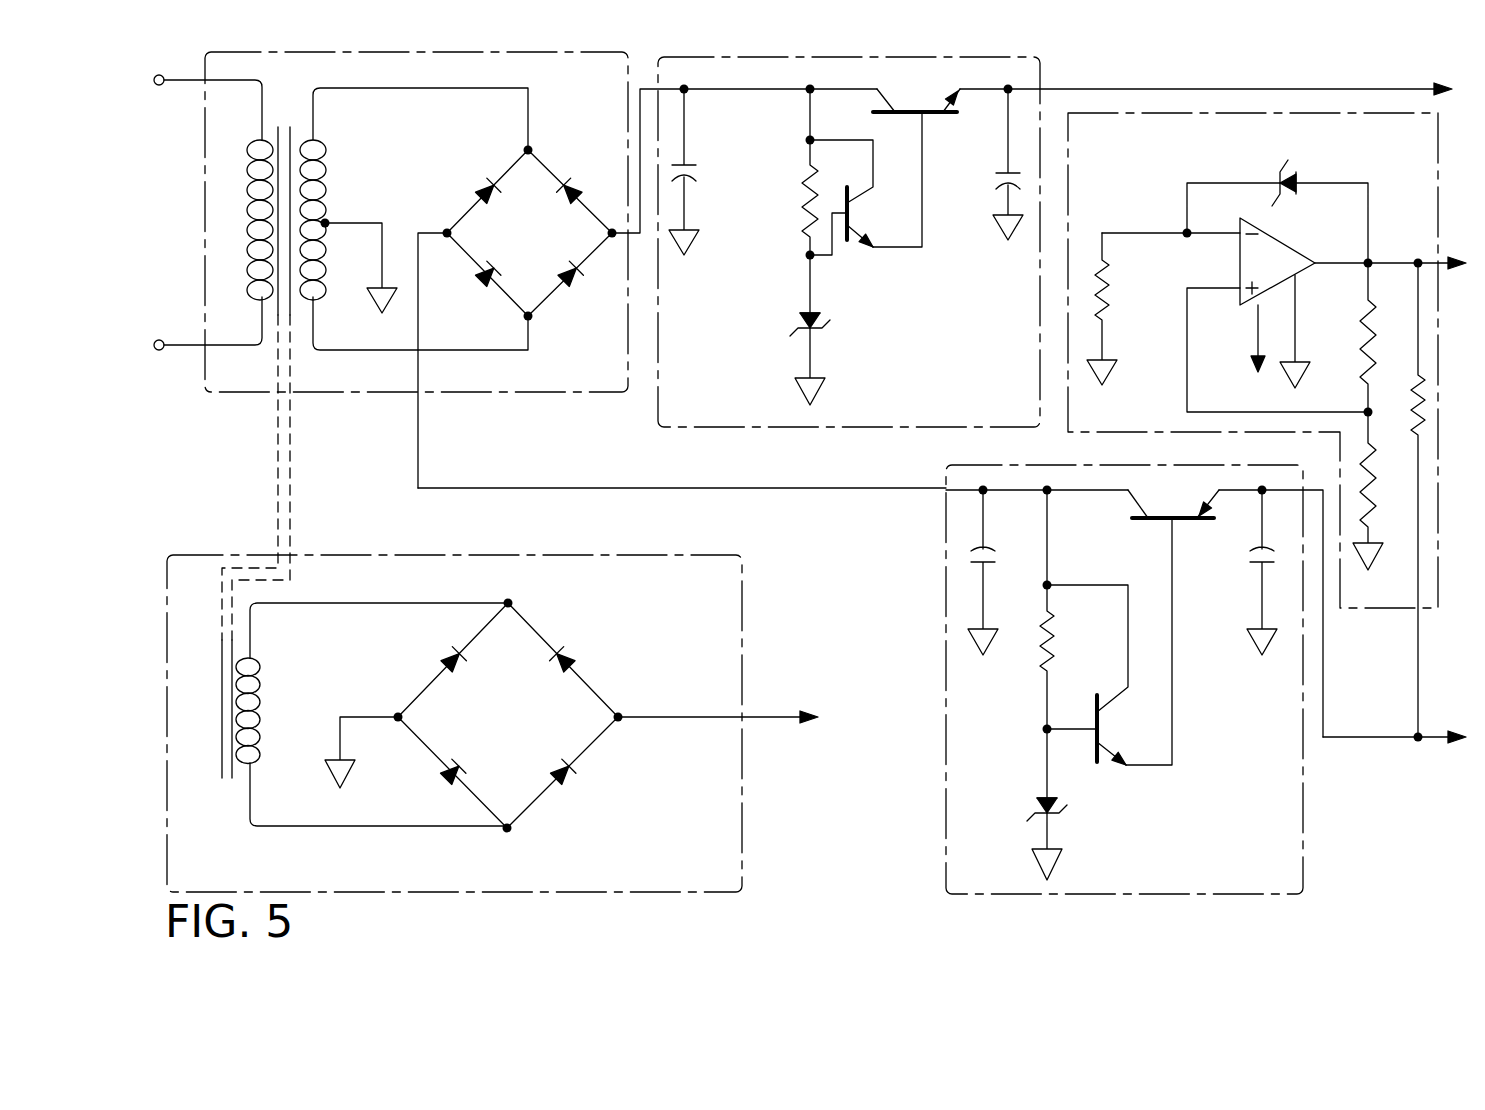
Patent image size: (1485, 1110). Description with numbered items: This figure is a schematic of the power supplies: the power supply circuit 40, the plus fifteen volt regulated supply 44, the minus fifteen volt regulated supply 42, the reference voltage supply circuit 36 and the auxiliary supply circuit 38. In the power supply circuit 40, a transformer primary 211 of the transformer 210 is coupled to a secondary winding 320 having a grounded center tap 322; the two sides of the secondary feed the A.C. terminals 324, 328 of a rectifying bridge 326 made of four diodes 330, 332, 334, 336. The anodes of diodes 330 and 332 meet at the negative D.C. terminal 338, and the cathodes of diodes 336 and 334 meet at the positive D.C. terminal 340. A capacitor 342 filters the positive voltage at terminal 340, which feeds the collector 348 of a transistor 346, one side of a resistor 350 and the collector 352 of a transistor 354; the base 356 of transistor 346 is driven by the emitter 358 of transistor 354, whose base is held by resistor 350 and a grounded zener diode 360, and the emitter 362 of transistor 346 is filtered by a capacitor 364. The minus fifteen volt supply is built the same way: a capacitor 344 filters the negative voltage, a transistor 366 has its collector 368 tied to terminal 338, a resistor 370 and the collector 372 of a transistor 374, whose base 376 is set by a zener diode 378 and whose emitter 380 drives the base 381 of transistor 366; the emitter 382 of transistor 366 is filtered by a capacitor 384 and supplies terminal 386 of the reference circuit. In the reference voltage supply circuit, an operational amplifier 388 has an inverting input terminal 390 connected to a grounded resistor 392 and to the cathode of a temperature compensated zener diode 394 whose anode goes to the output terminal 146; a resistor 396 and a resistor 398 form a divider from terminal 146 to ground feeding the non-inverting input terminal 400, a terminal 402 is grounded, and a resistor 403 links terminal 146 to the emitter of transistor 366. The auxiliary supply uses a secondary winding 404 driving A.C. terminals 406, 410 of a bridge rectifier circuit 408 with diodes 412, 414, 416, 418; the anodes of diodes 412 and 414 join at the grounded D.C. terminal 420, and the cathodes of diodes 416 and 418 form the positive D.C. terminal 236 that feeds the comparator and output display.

The power supply circuit 40 is at (450, 68).
The transformer 210 is at (313, 80).
The transformer primary 211 is at (248, 205).
The transformer secondary winding 320 is at (327, 240).
The center tap 322 is at (328, 222).
The rectifying bridge 326 is at (545, 242).
The A.C. terminal 324 is at (532, 150).
The A.C. terminal 328 is at (530, 320).
The negative D.C. terminal 338 is at (447, 230).
The positive D.C. terminal 340 is at (612, 240).
The diode 330 is at (483, 186).
The diode 332 is at (483, 280).
The diode 334 is at (575, 283).
The diode 336 is at (573, 188).
The +15 volt regulated supply 44 is at (856, 72).
The capacitor 342 is at (694, 178).
The transistor 346 is at (921, 155).
The collector 348 is at (870, 97).
The base 356 is at (921, 117).
The emitter 362 is at (962, 93).
The resistor 350 is at (806, 203).
The collector 352 is at (873, 170).
The transistor 354 is at (868, 217).
The emitter 358 is at (868, 250).
The zener diode 360 is at (804, 313).
The filter capacitor 364 is at (1000, 186).
The reference voltage supply circuit 36 is at (1422, 180).
The operational amplifier 388 is at (1237, 300).
The inverting input terminal 390 is at (1238, 232).
The non-inverting input terminal 400 is at (1240, 288).
The terminal 402 is at (1300, 278).
The terminal 386 is at (1256, 328).
The temperature compensated zener diode 394 is at (1288, 180).
The resistor 392 is at (1108, 290).
The terminal 146 is at (1442, 262).
The resistor 396 is at (1362, 340).
The resistor 398 is at (1370, 495).
The resistor 403 is at (1418, 450).
The -15 volt regulated supply 42 is at (958, 682).
The capacitor 344 is at (993, 556).
The filter capacitor 384 is at (1252, 553).
The transistor 366 is at (1150, 602).
The collector 368 is at (1128, 495).
The emitter 382 is at (1205, 505).
The base 381 is at (1160, 523).
The resistor 370 is at (1053, 618).
The transistor 374 is at (1099, 700).
The collector 372 is at (1120, 690).
The emitter 380 is at (1118, 770).
The base 376 is at (1072, 710).
The zener diode 378 is at (1040, 805).
The auxiliary supply circuit 38 is at (693, 568).
The secondary winding 404 is at (365, 714).
The bridge rectifier circuit 408 is at (520, 723).
The A.C. terminal 406 is at (513, 603).
The A.C. terminal 410 is at (510, 832).
The D.C. terminal 420 is at (398, 712).
The diode 412 is at (455, 650).
The diode 414 is at (445, 775).
The diode 416 is at (570, 780).
The diode 418 is at (575, 660).
The positive D.C. terminal 236 is at (758, 718).